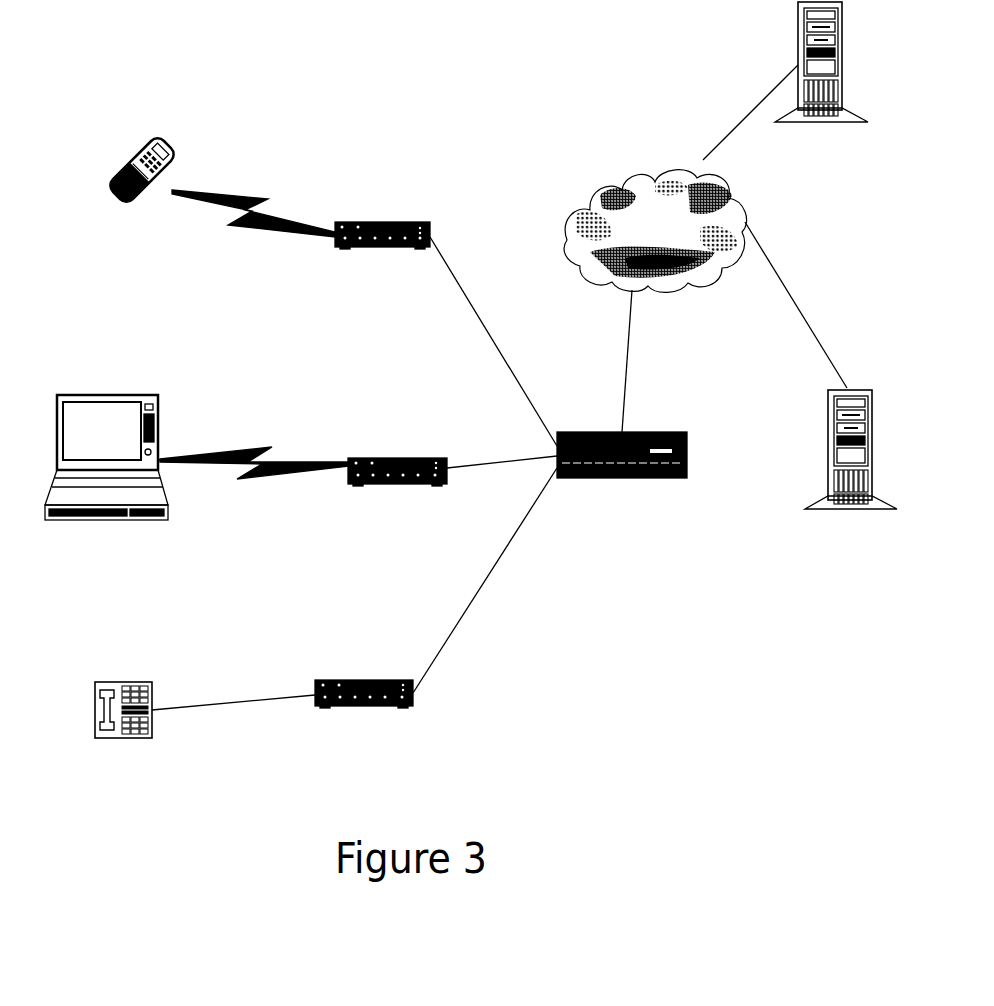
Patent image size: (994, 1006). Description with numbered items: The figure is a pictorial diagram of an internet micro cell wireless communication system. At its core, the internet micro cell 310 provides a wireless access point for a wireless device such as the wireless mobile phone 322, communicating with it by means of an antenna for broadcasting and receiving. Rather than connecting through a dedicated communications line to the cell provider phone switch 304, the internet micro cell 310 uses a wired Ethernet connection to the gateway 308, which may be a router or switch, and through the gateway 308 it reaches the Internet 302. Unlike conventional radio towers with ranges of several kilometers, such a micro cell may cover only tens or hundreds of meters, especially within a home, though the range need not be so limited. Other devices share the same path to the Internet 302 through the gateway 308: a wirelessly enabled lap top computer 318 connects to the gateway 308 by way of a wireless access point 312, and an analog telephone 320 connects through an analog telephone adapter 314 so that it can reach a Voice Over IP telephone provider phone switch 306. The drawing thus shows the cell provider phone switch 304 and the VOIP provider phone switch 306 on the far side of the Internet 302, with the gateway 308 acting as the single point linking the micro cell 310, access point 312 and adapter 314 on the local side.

The Internet 302 is at (655, 231).
The cell provider phone switch 304 is at (821, 72).
The Voice Over IP telephone provider phone switch 306 is at (851, 460).
The gateway 308 is at (622, 466).
The internet micro cell 310 is at (382, 246).
The wireless access point 312 is at (397, 483).
The analog telephone adapter 314 is at (364, 705).
The wirelessly enabled lap top computer 318 is at (106, 472).
The analog telephone 320 is at (123, 723).
The wireless mobile phone 322 is at (142, 190).